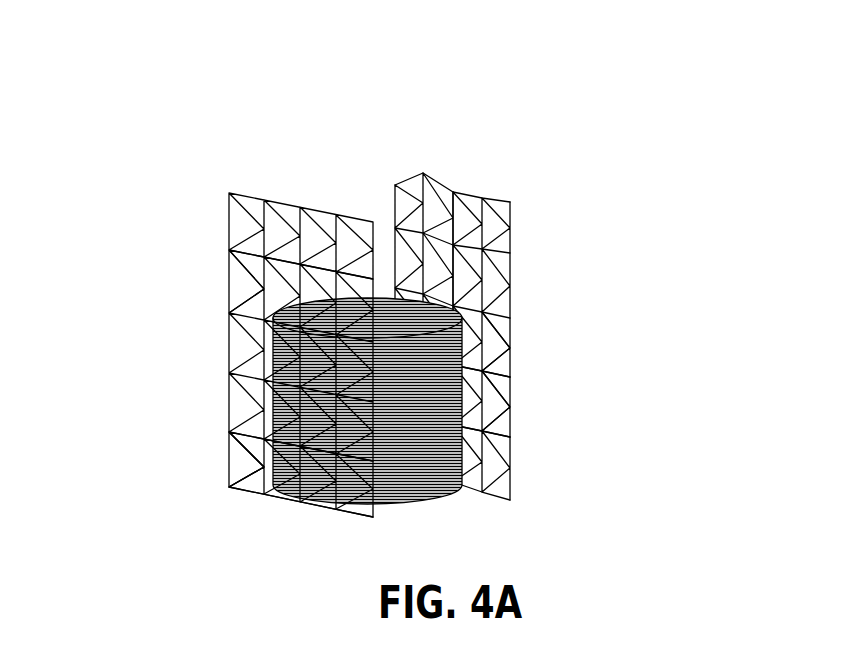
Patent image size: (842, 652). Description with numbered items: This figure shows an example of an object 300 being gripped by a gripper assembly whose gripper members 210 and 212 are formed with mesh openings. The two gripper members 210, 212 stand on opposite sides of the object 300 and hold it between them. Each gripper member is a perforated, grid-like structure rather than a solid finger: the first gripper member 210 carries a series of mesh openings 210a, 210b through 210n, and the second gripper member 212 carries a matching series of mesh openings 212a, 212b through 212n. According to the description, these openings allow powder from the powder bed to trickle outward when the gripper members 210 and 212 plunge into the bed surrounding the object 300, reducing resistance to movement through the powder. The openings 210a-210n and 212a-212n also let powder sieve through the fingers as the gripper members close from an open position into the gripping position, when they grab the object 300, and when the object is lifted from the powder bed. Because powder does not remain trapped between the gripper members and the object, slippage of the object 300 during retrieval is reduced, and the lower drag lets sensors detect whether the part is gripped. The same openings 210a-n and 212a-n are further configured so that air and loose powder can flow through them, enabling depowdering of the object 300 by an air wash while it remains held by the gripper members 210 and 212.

The gripper member 210 is at (235, 345).
The mesh opening of gripper member 210a is at (229, 282).
The mesh opening of gripper member 210b is at (231, 430).
The mesh opening of gripper member 210n is at (248, 492).
The gripper member 212 is at (485, 253).
The mesh opening of gripper member 212a is at (454, 192).
The mesh opening of gripper member 212b is at (500, 347).
The mesh opening of gripper member 212n is at (500, 415).
The object 300 is at (367, 401).